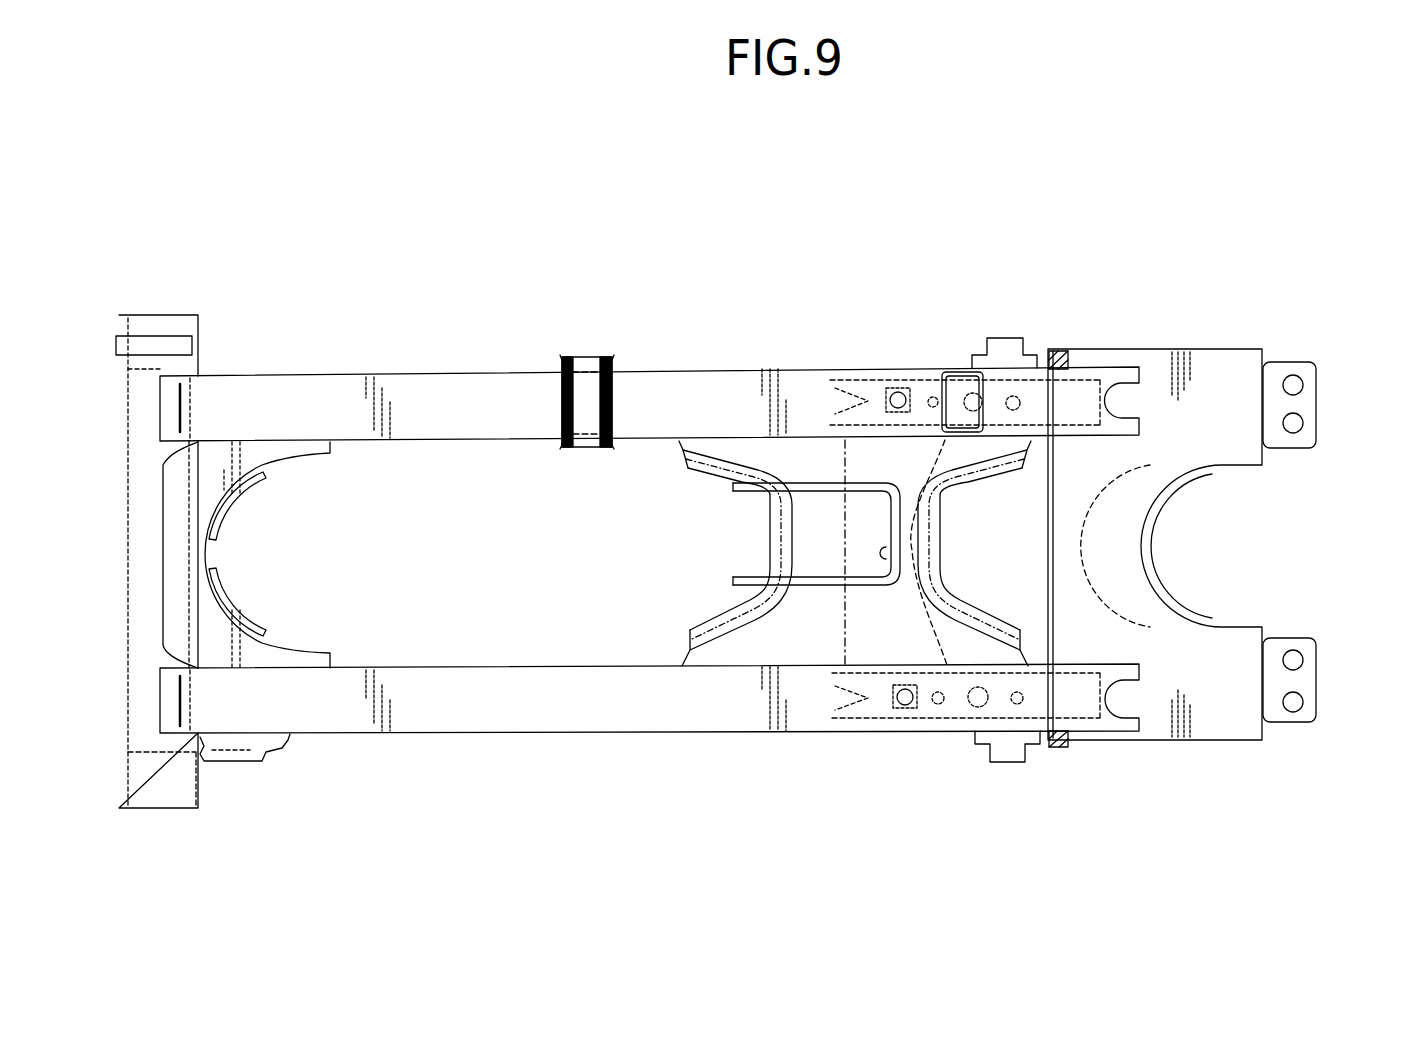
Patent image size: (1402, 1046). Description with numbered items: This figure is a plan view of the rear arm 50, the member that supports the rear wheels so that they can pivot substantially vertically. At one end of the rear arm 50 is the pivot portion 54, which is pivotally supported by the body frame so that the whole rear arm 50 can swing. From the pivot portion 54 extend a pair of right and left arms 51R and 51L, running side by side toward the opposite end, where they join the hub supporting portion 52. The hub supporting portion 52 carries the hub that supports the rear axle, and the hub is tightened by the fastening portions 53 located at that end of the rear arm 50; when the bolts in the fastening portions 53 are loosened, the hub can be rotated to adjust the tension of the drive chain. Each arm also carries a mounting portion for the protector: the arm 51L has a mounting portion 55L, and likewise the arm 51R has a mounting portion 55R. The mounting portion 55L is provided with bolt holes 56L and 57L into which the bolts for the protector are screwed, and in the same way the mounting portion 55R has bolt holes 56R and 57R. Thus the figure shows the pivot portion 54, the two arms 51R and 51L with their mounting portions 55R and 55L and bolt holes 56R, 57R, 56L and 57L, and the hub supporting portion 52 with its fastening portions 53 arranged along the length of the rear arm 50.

The rear arm 50 is at (1180, 322).
The right arm 51R is at (675, 392).
The left arm 51L is at (626, 733).
The hub supporting portion 52 is at (1133, 349).
The fastening portions 53 is at (1318, 405).
The pivot portion 54 is at (178, 332).
The mounting portion 55R is at (925, 366).
The mounting portion 55L is at (958, 733).
The bolt hole 56R is at (897, 366).
The bolt hole 56L is at (908, 733).
The bolt hole 57R is at (1058, 350).
The bolt hole 57L is at (1062, 748).